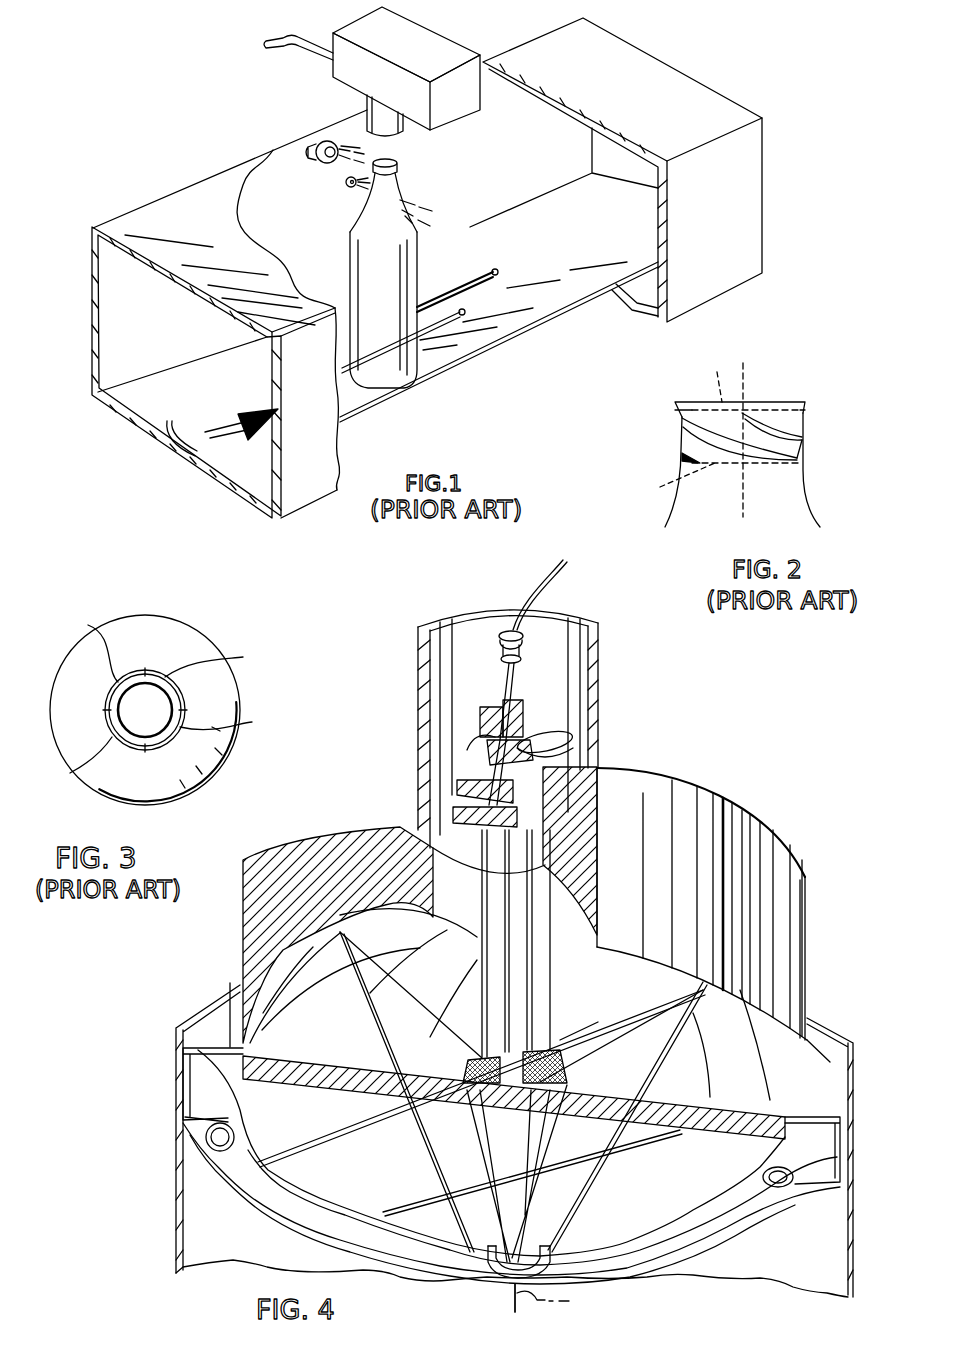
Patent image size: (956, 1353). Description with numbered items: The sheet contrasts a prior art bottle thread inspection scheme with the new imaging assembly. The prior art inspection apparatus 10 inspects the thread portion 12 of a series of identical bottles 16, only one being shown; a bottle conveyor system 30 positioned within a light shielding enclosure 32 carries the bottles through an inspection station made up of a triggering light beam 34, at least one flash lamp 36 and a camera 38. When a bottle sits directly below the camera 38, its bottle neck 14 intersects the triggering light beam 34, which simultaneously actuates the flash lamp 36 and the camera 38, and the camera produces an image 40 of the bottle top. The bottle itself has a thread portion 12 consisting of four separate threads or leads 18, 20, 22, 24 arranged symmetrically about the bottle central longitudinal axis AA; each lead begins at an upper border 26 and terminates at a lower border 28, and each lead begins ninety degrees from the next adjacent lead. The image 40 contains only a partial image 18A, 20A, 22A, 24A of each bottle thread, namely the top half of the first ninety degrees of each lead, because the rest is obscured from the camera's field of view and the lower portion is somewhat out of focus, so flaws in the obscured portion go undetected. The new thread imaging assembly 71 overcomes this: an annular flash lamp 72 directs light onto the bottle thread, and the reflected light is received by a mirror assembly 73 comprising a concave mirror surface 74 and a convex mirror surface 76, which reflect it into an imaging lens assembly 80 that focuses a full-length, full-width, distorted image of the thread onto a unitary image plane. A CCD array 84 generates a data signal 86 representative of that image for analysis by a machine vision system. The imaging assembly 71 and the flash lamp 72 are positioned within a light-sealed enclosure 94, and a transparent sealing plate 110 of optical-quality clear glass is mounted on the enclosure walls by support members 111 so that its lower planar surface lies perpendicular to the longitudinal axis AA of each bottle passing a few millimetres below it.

In FIG. 1, the inspection apparatus 10 is at (156, 52).
In FIG. 1, the thread portion 12 is at (410, 170).
In FIG. 2, the thread portion 12 is at (818, 427).
In FIG. 4, the thread portion 12 is at (567, 1258).
In FIG. 1, the bottle neck 14 is at (405, 198).
In FIG. 2, the bottle neck 14 is at (810, 503).
In FIG. 1, the bottle 16 is at (428, 272).
In FIG. 2, the thread lead 18 is at (682, 457).
In FIG. 2, the thread lead 20 is at (680, 418).
In FIG. 2, the thread lead 22 is at (763, 420).
In FIG. 2, the thread lead 24 is at (805, 412).
In FIG. 2, the upper border 26 is at (746, 406).
In FIG. 2, the lower border 28 is at (674, 482).
In FIG. 1, the bottle conveyor system 30 is at (505, 350).
In FIG. 1, the light shielding enclosure 32 is at (136, 200).
In FIG. 1, the triggering light beam 34 is at (344, 188).
In FIG. 1, the flash lamp 36 is at (296, 161).
In FIG. 1, the camera 38 is at (472, 36).
In FIG. 1, the image 40 is at (311, 29).
In FIG. 3, the image 40 is at (232, 621).
In FIG. 3, the partial thread image 18A is at (237, 726).
In FIG. 3, the partial thread image 20A is at (72, 767).
In FIG. 3, the partial thread image 22A is at (85, 643).
In FIG. 3, the partial thread image 24A is at (223, 662).
In FIG. 4, the thread imaging assembly 71 is at (397, 656).
In FIG. 4, the annular flash lamp 72 is at (777, 1201).
In FIG. 4, the mirror assembly 73 is at (335, 989).
In FIG. 4, the concave mirror surface 74 is at (428, 850).
In FIG. 4, the convex mirror surface 76 is at (562, 1036).
In FIG. 4, the imaging lens assembly 80 is at (452, 703).
In FIG. 4, the CCD array 84 is at (538, 629).
In FIG. 4, the data signal 86 is at (563, 562).
In FIG. 4, the light-sealed enclosure 94 is at (177, 1181).
In FIG. 4, the transparent sealing plate 110 is at (359, 1053).
In FIG. 4, the support members 111 is at (831, 1062).
In FIG. 2, the bottle central longitudinal axis AA is at (743, 360).
In FIG. 4, the bottle central longitudinal axis AA is at (589, 1300).